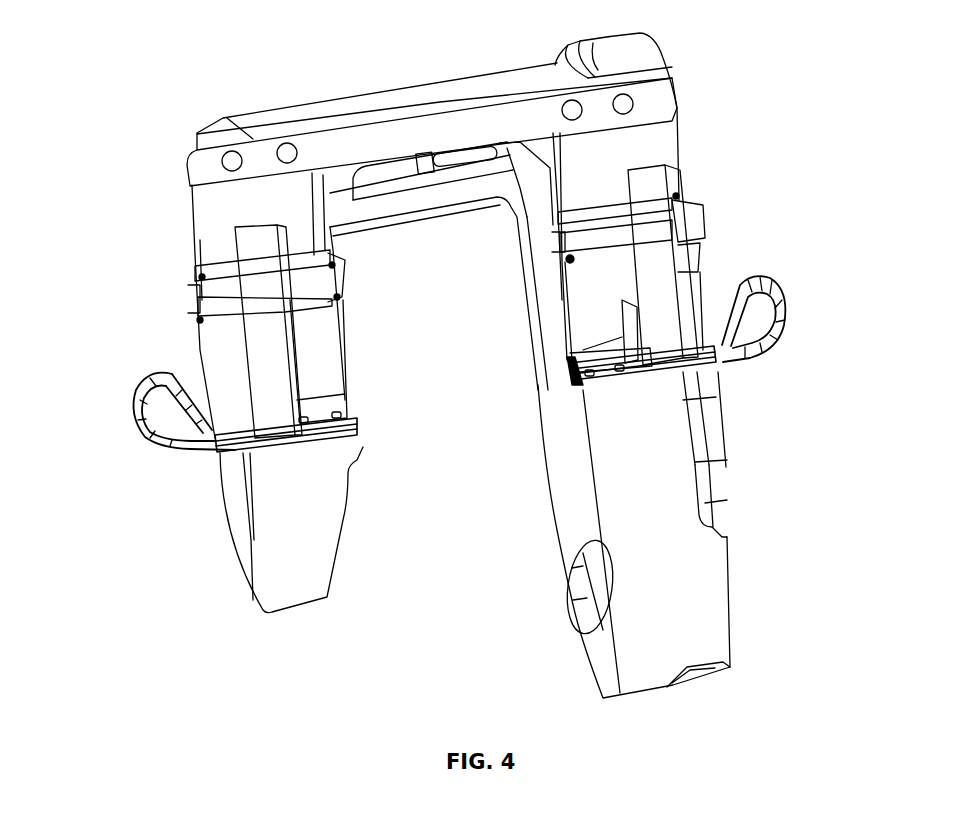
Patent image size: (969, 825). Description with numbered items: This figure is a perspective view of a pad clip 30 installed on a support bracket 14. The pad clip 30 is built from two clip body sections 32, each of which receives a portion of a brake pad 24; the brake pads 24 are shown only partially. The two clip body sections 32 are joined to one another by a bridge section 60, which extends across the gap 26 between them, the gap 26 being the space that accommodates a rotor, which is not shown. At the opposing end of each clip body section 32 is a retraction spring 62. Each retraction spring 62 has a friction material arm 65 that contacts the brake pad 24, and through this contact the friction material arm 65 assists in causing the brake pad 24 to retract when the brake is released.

The pad clip 30 is at (744, 119).
The bridge section 60 is at (383, 133).
The brake pad 24 is at (257, 299).
The clip body section 32 is at (210, 347).
The retraction spring 62 is at (138, 426).
The gap 26 is at (515, 283).
The friction material arm 65 is at (574, 380).
The support bracket 14 is at (680, 555).